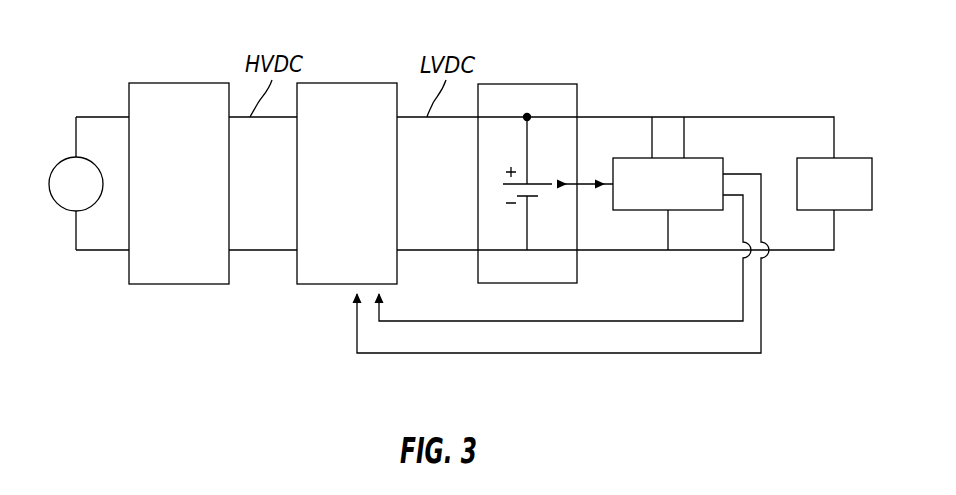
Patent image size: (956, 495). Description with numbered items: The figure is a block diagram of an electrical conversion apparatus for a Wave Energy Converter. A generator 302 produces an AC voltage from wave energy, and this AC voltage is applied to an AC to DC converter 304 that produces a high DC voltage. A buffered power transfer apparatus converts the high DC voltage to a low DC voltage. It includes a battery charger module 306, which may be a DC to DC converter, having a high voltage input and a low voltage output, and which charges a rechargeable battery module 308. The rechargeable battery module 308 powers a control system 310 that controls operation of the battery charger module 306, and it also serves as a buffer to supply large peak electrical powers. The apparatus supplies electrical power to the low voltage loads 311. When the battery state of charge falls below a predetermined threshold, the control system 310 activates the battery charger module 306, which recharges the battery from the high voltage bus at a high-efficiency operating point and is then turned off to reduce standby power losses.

The generator 302 is at (65, 212).
The AC to DC converter 304 is at (198, 197).
The battery charger module 306 is at (367, 197).
The rechargeable battery module 308 is at (565, 263).
The control system 310 is at (688, 197).
The low voltage loads 311 is at (852, 197).